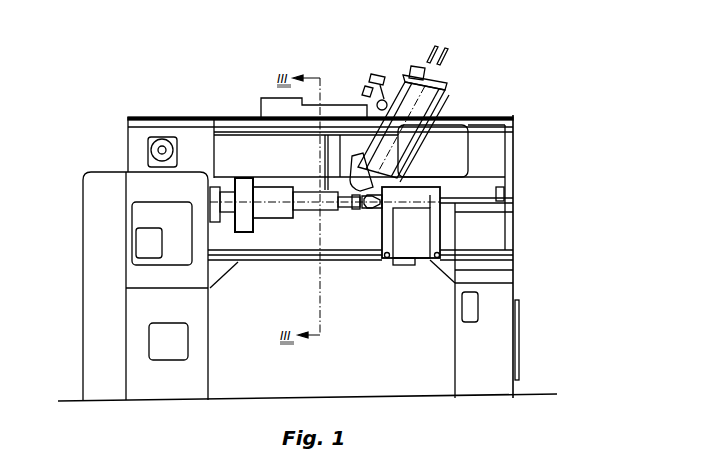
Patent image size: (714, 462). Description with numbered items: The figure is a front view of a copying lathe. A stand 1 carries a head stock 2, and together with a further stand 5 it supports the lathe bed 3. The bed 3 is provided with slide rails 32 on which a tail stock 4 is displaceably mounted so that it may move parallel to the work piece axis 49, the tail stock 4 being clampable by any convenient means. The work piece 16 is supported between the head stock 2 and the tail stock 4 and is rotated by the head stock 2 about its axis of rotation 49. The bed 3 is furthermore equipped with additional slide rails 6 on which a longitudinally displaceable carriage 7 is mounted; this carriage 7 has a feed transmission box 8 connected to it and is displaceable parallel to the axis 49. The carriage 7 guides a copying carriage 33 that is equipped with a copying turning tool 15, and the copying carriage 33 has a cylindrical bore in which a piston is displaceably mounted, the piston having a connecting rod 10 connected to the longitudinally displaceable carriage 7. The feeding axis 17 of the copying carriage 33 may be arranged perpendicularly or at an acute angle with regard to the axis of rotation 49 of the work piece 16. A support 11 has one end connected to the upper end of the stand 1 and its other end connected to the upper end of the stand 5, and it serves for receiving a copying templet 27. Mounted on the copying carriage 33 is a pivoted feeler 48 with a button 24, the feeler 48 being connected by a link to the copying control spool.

The stand 1 is at (142, 312).
The head stock 2 is at (141, 188).
The lathe bed 3 is at (352, 238).
The tail stock 4 is at (408, 200).
The further stand 5 is at (500, 296).
The additional slide rails 6 is at (490, 195).
The longitudinally displaceable carriage 7 is at (335, 145).
The feed transmission box 8 is at (451, 137).
The connecting rod 10 is at (416, 66).
The support 11 is at (497, 118).
The copying turning tool 15 is at (355, 160).
The work piece 16 is at (275, 210).
The feeding axis 17 is at (402, 107).
The button 24 is at (367, 92).
The copying templet 27 is at (272, 105).
The slide rails 32 is at (506, 205).
The copying carriage 33 is at (433, 92).
The feeler 48 is at (382, 76).
The work piece axis 49 is at (248, 232).